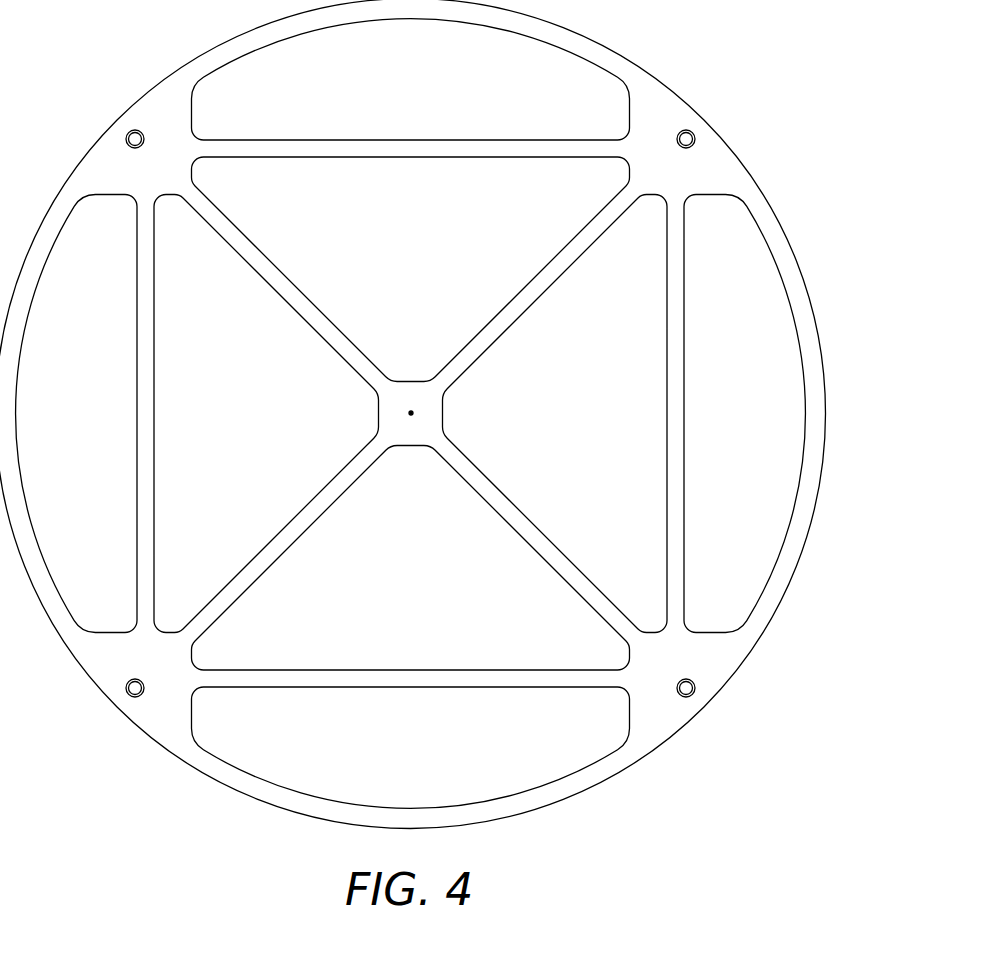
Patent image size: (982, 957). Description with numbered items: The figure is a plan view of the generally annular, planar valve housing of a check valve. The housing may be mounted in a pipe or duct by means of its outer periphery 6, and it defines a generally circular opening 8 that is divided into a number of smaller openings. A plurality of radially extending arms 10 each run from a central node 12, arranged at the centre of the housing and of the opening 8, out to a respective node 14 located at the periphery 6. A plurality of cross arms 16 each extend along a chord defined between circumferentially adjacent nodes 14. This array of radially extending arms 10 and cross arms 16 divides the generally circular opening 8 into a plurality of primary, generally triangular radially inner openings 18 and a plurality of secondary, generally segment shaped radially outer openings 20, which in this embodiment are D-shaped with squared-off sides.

The outer periphery 6 is at (272, 790).
The generally circular opening 8 is at (507, 664).
The radially extending arms 10 is at (283, 296).
The central node 12 is at (412, 413).
The node 14 is at (127, 163).
The cross arms 16 is at (410, 148).
The primary, generally triangular radially inner openings 18 is at (410, 413).
The secondary, generally segment shaped radially outer openings 20 is at (411, 414).